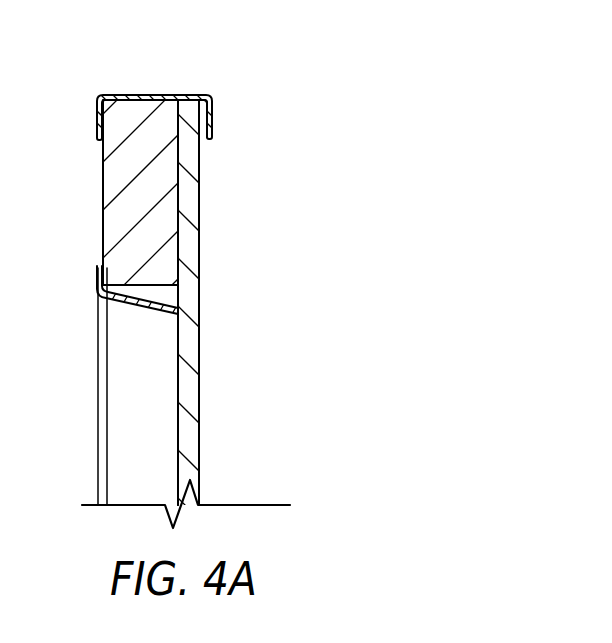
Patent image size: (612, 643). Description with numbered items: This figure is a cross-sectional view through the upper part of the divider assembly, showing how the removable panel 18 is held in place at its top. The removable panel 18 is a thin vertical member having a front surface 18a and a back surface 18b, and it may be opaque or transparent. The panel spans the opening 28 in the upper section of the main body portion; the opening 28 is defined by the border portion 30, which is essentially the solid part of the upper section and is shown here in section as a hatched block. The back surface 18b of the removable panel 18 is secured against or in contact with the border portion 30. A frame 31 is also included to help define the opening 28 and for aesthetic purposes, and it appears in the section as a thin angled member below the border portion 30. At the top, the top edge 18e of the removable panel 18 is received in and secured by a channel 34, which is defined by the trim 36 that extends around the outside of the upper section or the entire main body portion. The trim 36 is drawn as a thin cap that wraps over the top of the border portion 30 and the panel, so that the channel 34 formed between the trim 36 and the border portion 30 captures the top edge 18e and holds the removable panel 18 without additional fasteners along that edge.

The removable panel 18 is at (200, 386).
The front surface 18a is at (200, 436).
The back surface 18b is at (178, 443).
The top edge 18e is at (188, 100).
The opening 28 is at (128, 420).
The border portion 30 is at (172, 213).
The frame 31 is at (140, 300).
The channel 34 is at (211, 121).
The trim 36 is at (142, 95).